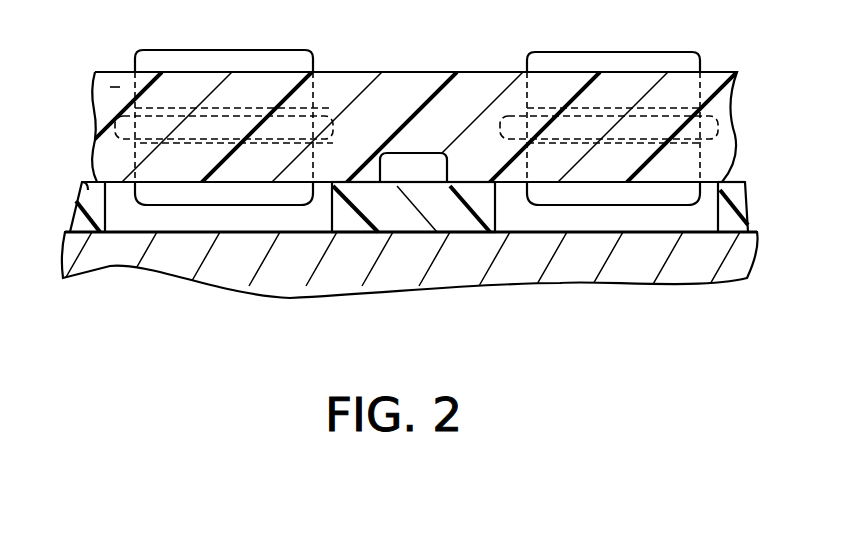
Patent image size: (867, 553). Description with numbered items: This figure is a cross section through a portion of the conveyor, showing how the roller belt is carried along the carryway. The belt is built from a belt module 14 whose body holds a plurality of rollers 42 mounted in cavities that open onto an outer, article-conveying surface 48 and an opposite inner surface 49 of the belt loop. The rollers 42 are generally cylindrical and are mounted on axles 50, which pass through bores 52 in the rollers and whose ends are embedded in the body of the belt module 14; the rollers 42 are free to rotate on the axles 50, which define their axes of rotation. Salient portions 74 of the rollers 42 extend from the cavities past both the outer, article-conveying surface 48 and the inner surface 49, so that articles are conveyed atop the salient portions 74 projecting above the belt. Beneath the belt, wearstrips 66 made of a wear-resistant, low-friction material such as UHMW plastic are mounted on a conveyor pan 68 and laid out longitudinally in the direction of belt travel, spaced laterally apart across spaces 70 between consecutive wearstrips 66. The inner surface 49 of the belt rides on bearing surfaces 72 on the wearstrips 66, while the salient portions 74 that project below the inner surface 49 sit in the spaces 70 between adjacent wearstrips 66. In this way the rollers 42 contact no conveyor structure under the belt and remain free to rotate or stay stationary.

The belt module 14 is at (110, 143).
The rollers 42 is at (630, 62).
The outer, article-conveying surface 48 is at (427, 72).
The inner surface 49 is at (81, 200).
The axles 50 is at (105, 87).
The bores 52 is at (700, 142).
The wearstrips 66 is at (338, 220).
The conveyor pan 68 is at (700, 280).
The spaces 70 is at (611, 217).
The bearing surfaces 72 is at (745, 183).
The salient portions 74 is at (200, 54).